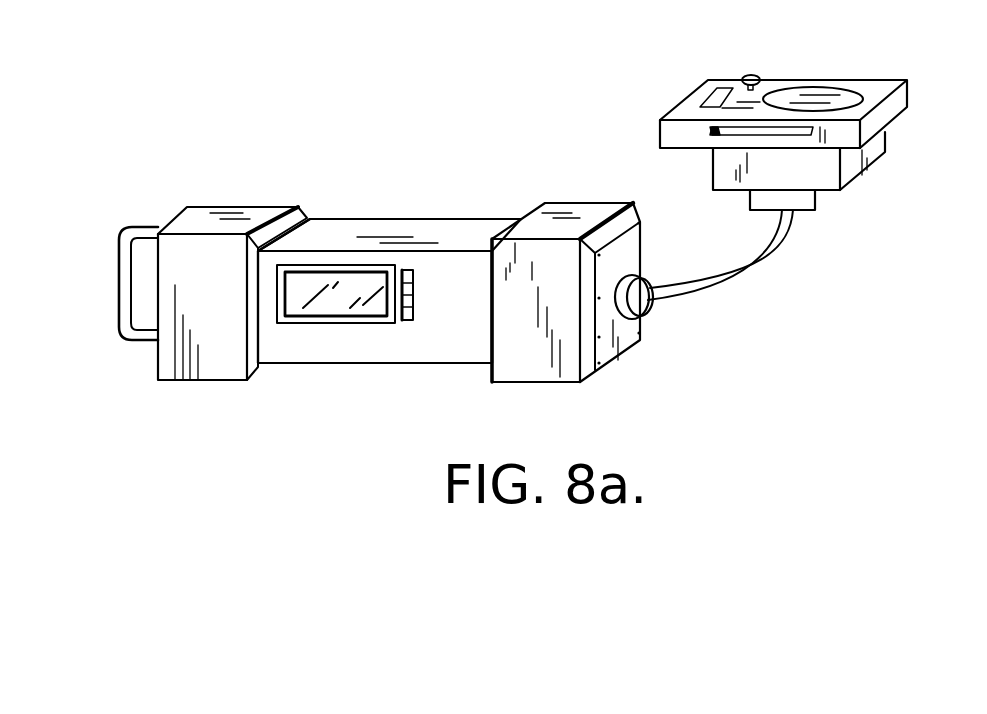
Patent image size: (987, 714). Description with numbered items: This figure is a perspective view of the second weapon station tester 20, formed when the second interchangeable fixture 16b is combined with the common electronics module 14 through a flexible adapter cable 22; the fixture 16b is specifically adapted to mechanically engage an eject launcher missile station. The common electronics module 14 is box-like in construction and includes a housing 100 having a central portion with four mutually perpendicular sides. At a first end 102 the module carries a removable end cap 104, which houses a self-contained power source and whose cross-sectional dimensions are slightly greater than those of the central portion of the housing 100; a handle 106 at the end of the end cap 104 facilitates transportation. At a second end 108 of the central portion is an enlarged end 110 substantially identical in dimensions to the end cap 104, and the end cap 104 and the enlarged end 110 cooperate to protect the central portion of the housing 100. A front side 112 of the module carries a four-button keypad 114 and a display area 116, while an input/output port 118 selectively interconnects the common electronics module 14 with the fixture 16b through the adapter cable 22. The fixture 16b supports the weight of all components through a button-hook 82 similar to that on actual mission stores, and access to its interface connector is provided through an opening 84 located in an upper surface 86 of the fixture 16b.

The common electronics module 14 is at (333, 227).
The second weapon station tester 20 is at (457, 170).
The flexible adapter cable 22 is at (747, 267).
The second interchangeable fixture 16b is at (662, 138).
The button-hook 82 is at (757, 73).
The opening 84 is at (823, 95).
The upper surface 86 is at (890, 87).
The housing 100 is at (292, 355).
The first end 102 is at (310, 220).
The removable end cap 104 is at (228, 212).
The handle 106 is at (123, 341).
The second end 108 is at (458, 355).
The enlarged end 110 is at (567, 367).
The front side 112 is at (470, 277).
The four-button keypad 114 is at (410, 322).
The display area 116 is at (342, 302).
The input/output port 118 is at (635, 337).